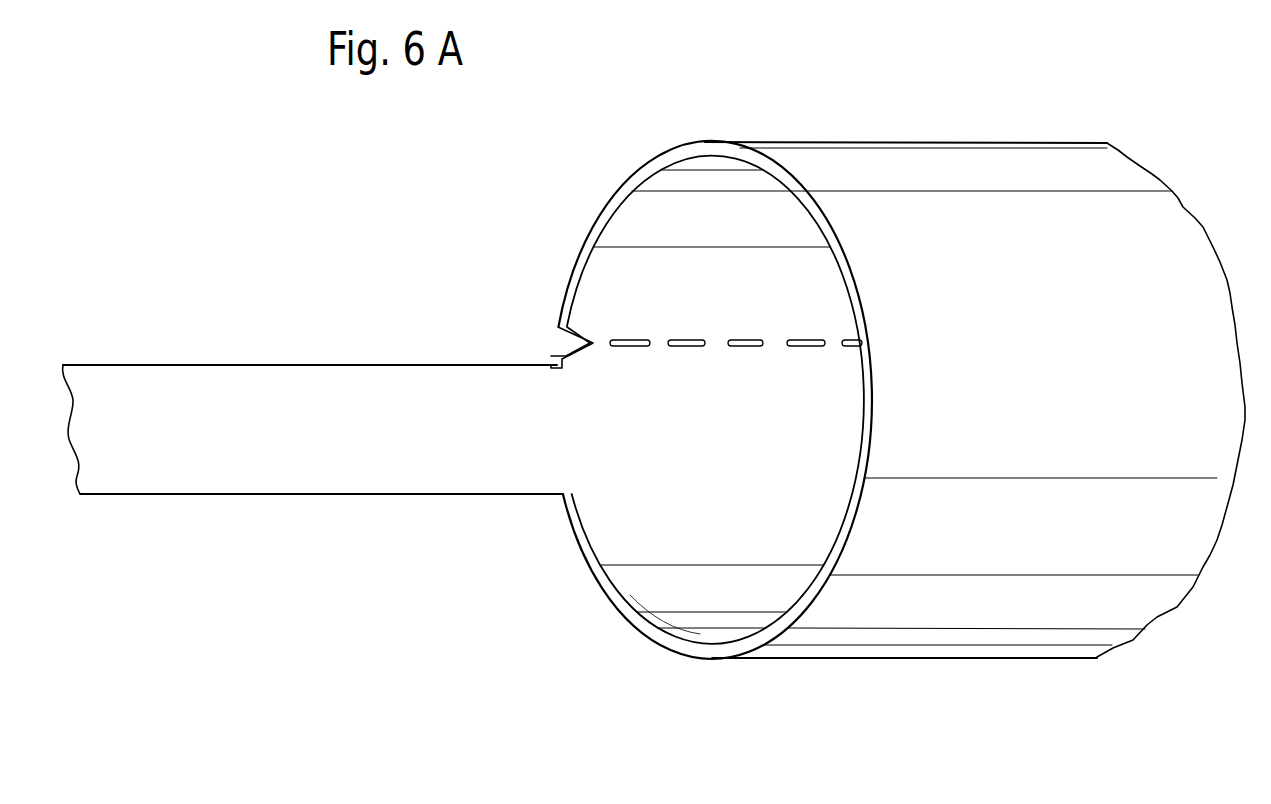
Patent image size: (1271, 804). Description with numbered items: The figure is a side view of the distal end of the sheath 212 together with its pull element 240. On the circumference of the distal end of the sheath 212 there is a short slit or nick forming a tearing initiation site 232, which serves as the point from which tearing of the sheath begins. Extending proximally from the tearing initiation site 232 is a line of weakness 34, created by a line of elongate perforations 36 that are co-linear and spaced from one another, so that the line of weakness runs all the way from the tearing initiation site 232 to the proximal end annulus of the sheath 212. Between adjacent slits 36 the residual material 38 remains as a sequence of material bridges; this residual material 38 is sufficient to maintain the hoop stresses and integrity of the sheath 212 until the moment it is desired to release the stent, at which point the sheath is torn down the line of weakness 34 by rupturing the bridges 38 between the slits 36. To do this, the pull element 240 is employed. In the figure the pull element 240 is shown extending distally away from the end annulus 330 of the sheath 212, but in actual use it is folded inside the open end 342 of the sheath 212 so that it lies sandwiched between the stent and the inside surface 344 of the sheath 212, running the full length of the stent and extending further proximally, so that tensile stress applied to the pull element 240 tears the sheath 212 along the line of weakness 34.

The line of weakness 34 is at (692, 324).
The elongate perforations 36 is at (750, 347).
The residual material 38 is at (660, 347).
The sheath 212 is at (1038, 612).
The tearing initiation site 232 is at (579, 342).
The pull element 240 is at (307, 462).
The end annulus 330 is at (703, 659).
The open end 342 is at (769, 507).
The inside surface 344 is at (695, 613).